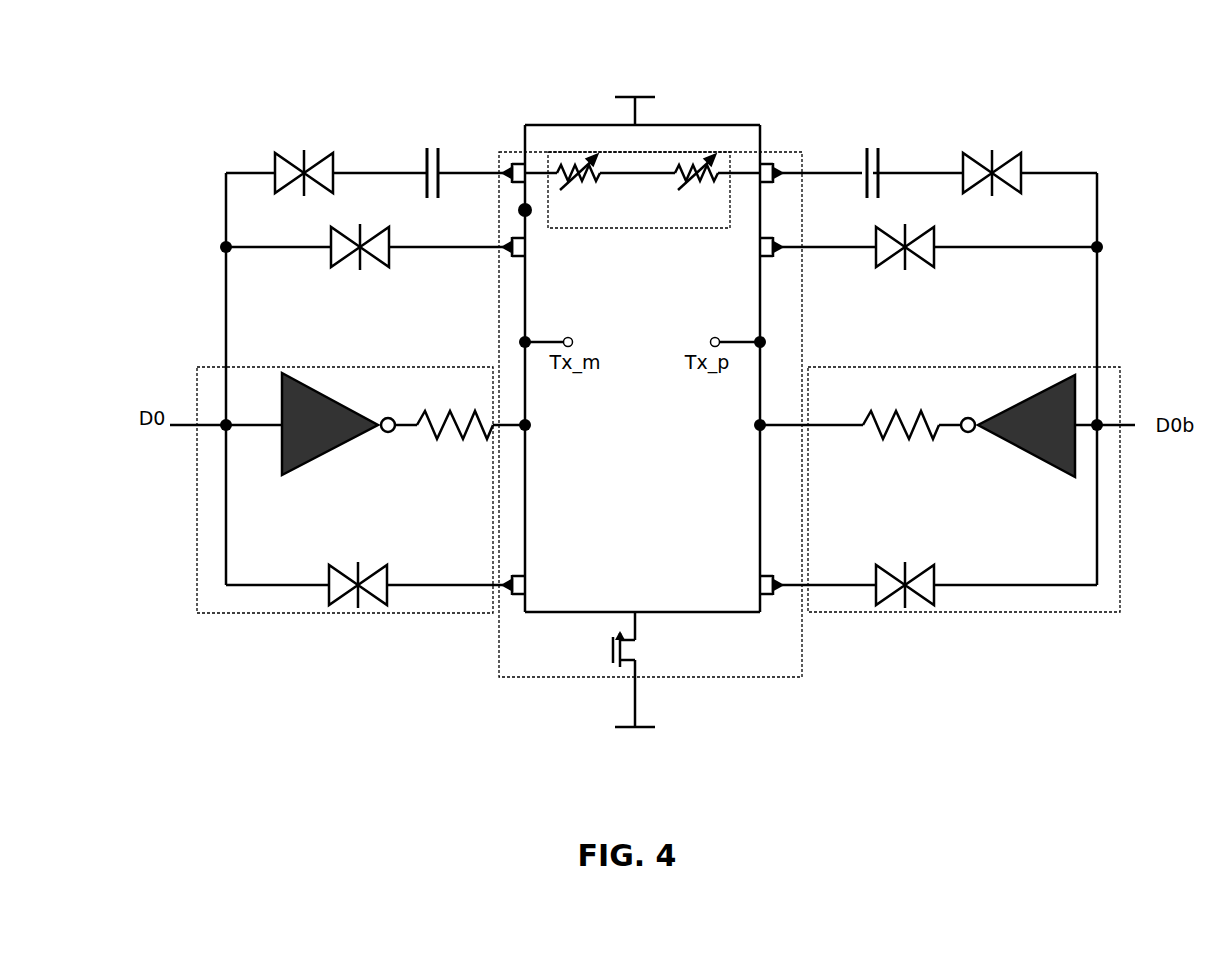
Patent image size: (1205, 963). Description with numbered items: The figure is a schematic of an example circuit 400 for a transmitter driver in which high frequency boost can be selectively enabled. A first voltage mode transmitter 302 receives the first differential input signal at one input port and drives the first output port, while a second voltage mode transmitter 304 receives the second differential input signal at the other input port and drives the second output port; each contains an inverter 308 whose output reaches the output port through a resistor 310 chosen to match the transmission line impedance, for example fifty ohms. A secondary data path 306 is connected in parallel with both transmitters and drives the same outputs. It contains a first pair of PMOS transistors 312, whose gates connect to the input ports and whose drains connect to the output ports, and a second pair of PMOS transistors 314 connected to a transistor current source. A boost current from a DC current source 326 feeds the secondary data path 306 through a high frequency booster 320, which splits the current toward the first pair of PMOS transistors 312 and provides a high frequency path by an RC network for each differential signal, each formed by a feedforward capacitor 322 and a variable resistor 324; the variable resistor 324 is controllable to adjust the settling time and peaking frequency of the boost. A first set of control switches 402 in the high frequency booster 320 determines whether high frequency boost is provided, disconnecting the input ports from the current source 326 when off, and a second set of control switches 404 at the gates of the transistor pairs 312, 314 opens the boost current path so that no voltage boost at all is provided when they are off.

The example circuit 400 is at (303, 72).
The first set of control switches 402 is at (283, 158).
The second set of control switches 404 is at (333, 265).
The feedforward capacitor 322 is at (426, 167).
The high frequency booster 320 is at (930, 112).
The variable resistor 324 is at (560, 170).
The DC current source 326 is at (635, 93).
The first pair of PMOS transistors 312 is at (530, 256).
The second pair of PMOS transistors 314 is at (530, 573).
The inverter 308 is at (343, 392).
The resistor 310 is at (463, 445).
The first voltage mode transmitter 302 is at (342, 615).
The second voltage mode transmitter 304 is at (965, 614).
The secondary data path 306 is at (760, 702).